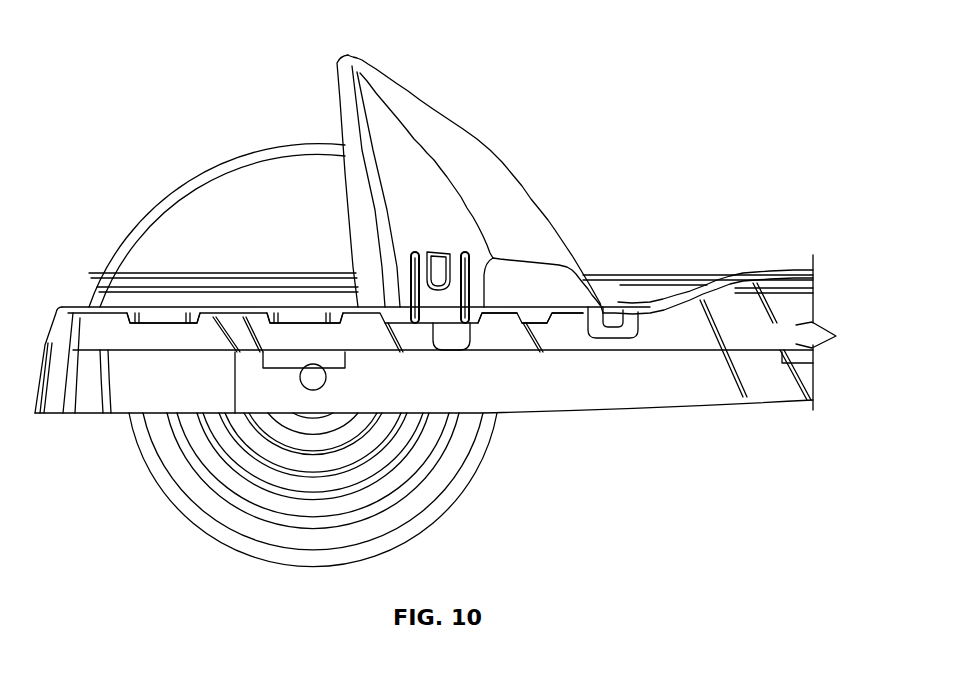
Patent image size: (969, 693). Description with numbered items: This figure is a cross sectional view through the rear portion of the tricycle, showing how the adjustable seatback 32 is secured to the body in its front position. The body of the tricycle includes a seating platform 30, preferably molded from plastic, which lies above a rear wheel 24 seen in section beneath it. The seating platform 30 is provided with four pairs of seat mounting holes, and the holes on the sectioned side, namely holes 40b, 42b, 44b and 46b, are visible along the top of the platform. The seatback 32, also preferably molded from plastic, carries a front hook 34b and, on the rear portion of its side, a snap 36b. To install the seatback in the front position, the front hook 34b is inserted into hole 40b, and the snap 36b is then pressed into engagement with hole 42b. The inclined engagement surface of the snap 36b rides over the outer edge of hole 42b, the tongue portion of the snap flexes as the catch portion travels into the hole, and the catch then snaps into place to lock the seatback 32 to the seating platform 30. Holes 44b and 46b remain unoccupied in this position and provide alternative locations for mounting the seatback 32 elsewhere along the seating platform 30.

The rear wheel 24 is at (303, 565).
The seating platform 30 is at (748, 273).
The seatback 32 is at (442, 128).
The front hook 34b is at (619, 332).
The snap 36b is at (447, 336).
The seat mounting hole 40b is at (568, 318).
The seat mounting hole 42b is at (478, 328).
The seat mounting hole 44b is at (307, 316).
The seat mounting hole 46b is at (167, 317).